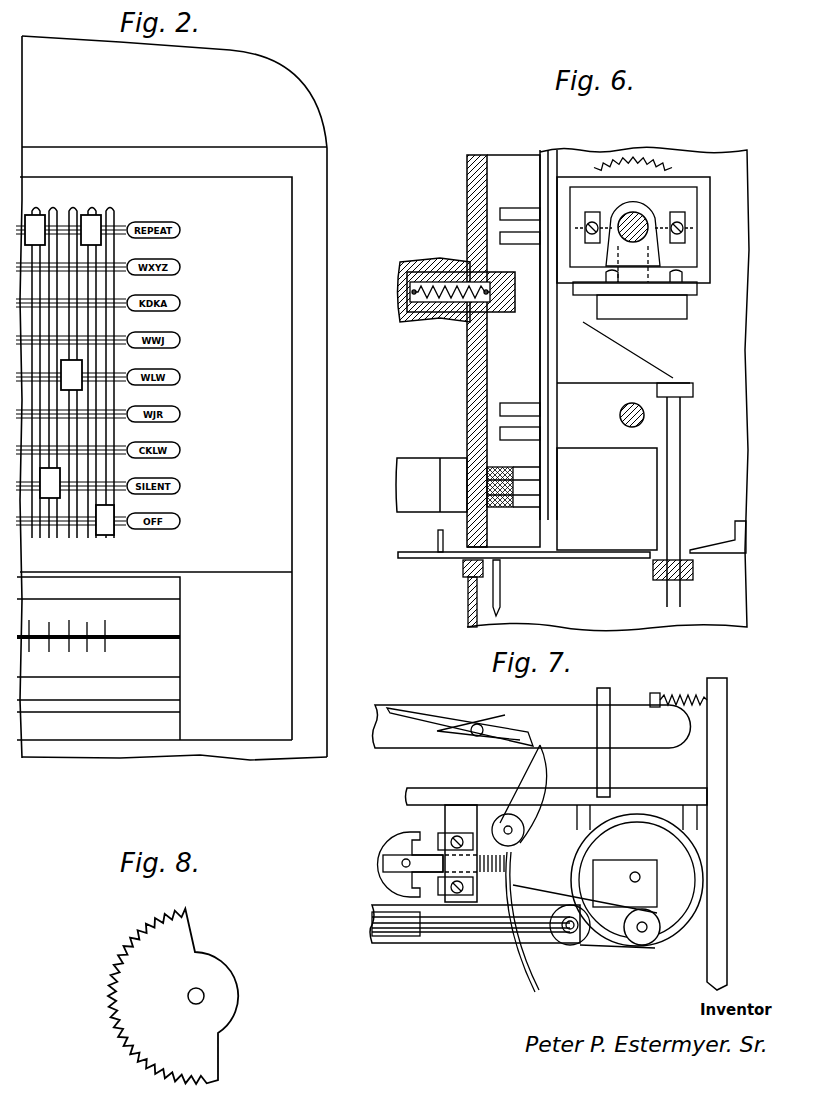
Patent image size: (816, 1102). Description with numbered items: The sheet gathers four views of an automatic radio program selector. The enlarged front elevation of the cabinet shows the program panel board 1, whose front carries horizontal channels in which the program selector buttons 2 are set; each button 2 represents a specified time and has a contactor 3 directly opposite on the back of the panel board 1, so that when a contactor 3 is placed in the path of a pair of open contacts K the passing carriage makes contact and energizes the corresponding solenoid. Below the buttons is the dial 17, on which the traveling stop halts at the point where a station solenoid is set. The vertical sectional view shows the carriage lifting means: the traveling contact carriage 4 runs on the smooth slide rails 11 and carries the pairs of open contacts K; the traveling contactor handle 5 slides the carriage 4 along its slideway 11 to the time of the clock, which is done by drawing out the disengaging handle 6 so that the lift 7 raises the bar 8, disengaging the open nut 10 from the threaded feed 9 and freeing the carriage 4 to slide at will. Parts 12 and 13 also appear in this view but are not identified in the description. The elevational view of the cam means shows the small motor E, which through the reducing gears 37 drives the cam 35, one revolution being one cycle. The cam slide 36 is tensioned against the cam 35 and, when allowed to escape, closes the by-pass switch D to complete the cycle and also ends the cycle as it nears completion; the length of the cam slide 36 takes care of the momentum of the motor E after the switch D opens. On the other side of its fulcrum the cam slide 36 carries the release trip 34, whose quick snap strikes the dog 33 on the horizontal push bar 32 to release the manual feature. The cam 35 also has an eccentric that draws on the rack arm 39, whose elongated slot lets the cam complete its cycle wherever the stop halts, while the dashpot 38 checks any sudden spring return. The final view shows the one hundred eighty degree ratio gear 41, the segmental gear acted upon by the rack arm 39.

In FIG. 2, the program panel board 1 is at (267, 233).
In FIG. 6, the program panel board 1 is at (742, 225).
In FIG. 2, the program selector buttons 2 is at (100, 226).
In FIG. 6, the program selector buttons 2 is at (418, 458).
In FIG. 6, the contactor 3 is at (490, 510).
In FIG. 6, the traveling contact carriage 4 is at (557, 358).
In FIG. 6, the traveling contactor handle 5 is at (418, 560).
In FIG. 6, the disengaging handle 6 is at (436, 535).
In FIG. 6, the lift 7 is at (467, 190).
In FIG. 6, the bar 8 is at (672, 343).
In FIG. 6, the threaded feed 9 is at (646, 222).
In FIG. 6, the open nut 10 is at (702, 180).
In FIG. 6, the slide rails 11 is at (632, 403).
In FIG. 6, the block 12 is at (634, 445).
In FIG. 6, the pin 13 is at (503, 594).
In FIG. 2, the dial 17 is at (162, 617).
In FIG. 6, the open contacts K is at (516, 234).
In FIG. 7, the horizontal push bar 32 is at (410, 735).
In FIG. 7, the dog 33 is at (533, 745).
In FIG. 7, the release trip 34 is at (530, 775).
In FIG. 7, the cam 35 is at (616, 950).
In FIG. 7, the cam slide 36 is at (528, 965).
In FIG. 7, the reducing gears 37 is at (647, 950).
In FIG. 7, the dashpot 38 is at (400, 929).
In FIG. 7, the rack arm 39 is at (476, 945).
In FIG. 8, the ratio gear 41 is at (188, 1042).
In FIG. 7, the by-pass switch D is at (401, 842).
In FIG. 7, the motor E is at (700, 919).